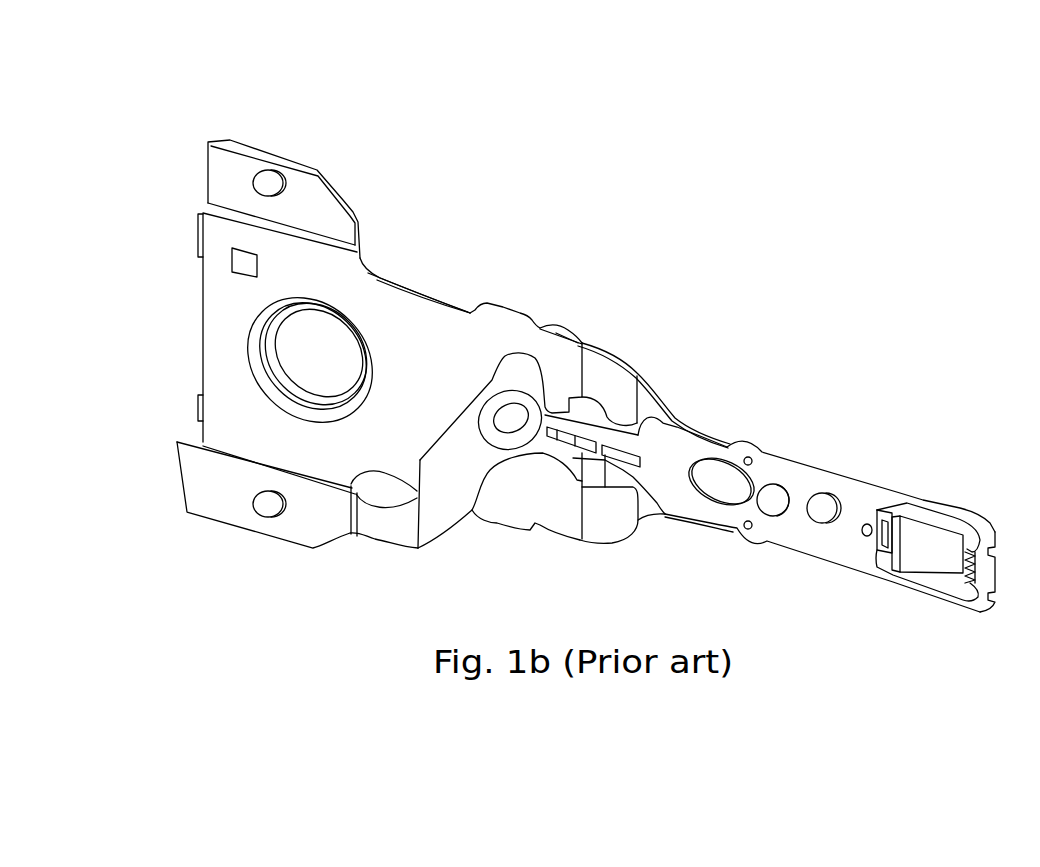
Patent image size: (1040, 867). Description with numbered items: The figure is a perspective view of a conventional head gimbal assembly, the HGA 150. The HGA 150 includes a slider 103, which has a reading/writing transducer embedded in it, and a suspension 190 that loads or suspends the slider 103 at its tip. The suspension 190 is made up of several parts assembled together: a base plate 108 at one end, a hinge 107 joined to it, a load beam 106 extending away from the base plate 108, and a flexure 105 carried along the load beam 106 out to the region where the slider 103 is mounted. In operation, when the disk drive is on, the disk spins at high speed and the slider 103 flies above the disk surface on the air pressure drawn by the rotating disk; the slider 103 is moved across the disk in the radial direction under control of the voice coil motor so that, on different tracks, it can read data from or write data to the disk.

The HGA 150 is at (276, 89).
The suspension 190 is at (807, 258).
The base plate 108 is at (558, 332).
The hinge 107 is at (597, 365).
The load beam 106 is at (650, 405).
The flexure 105 is at (783, 477).
The slider 103 is at (923, 562).